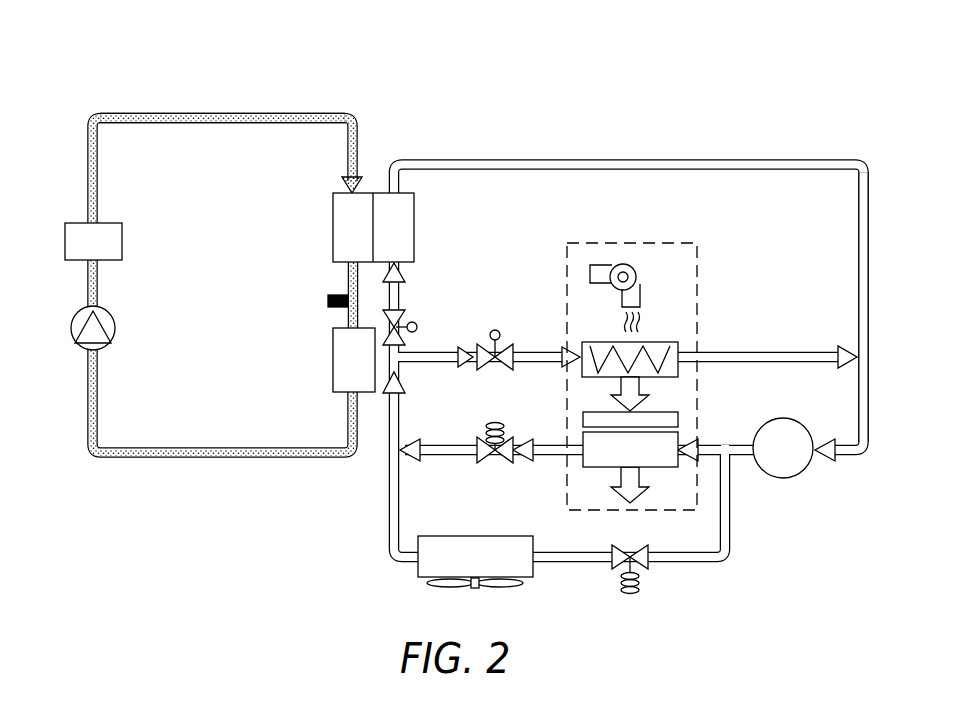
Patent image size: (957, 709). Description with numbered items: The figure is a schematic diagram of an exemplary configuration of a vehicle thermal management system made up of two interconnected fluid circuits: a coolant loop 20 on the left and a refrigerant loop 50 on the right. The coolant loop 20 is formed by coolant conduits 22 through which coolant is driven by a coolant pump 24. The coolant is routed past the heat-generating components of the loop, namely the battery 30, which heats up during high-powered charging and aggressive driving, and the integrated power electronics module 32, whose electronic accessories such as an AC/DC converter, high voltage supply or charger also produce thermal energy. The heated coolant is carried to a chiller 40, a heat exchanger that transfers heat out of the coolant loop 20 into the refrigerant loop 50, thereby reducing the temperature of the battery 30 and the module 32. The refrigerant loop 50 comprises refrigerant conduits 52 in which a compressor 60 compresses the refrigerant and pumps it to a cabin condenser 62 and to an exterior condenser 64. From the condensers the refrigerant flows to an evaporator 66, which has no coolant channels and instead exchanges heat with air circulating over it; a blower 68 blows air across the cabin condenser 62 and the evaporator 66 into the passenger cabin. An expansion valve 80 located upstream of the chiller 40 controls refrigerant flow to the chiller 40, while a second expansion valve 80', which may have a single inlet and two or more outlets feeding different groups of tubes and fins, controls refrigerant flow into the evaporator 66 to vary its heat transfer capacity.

The coolant loop 20 is at (88, 178).
The coolant conduits 22 is at (218, 112).
The coolant pump 24 is at (113, 332).
The battery 30 is at (333, 360).
The integrated power electronics module 32 is at (122, 240).
The chiller 40 is at (368, 178).
The refrigerant loop 50 is at (610, 160).
The refrigerant conduits 52 is at (748, 160).
The compressor 60 is at (796, 476).
The cabin condenser 62 is at (667, 467).
The exterior condenser 64 is at (418, 570).
The evaporator 66 is at (665, 341).
The blower 68 is at (640, 262).
The expansion valve 80 is at (428, 287).
The expansion valve 80' is at (513, 312).